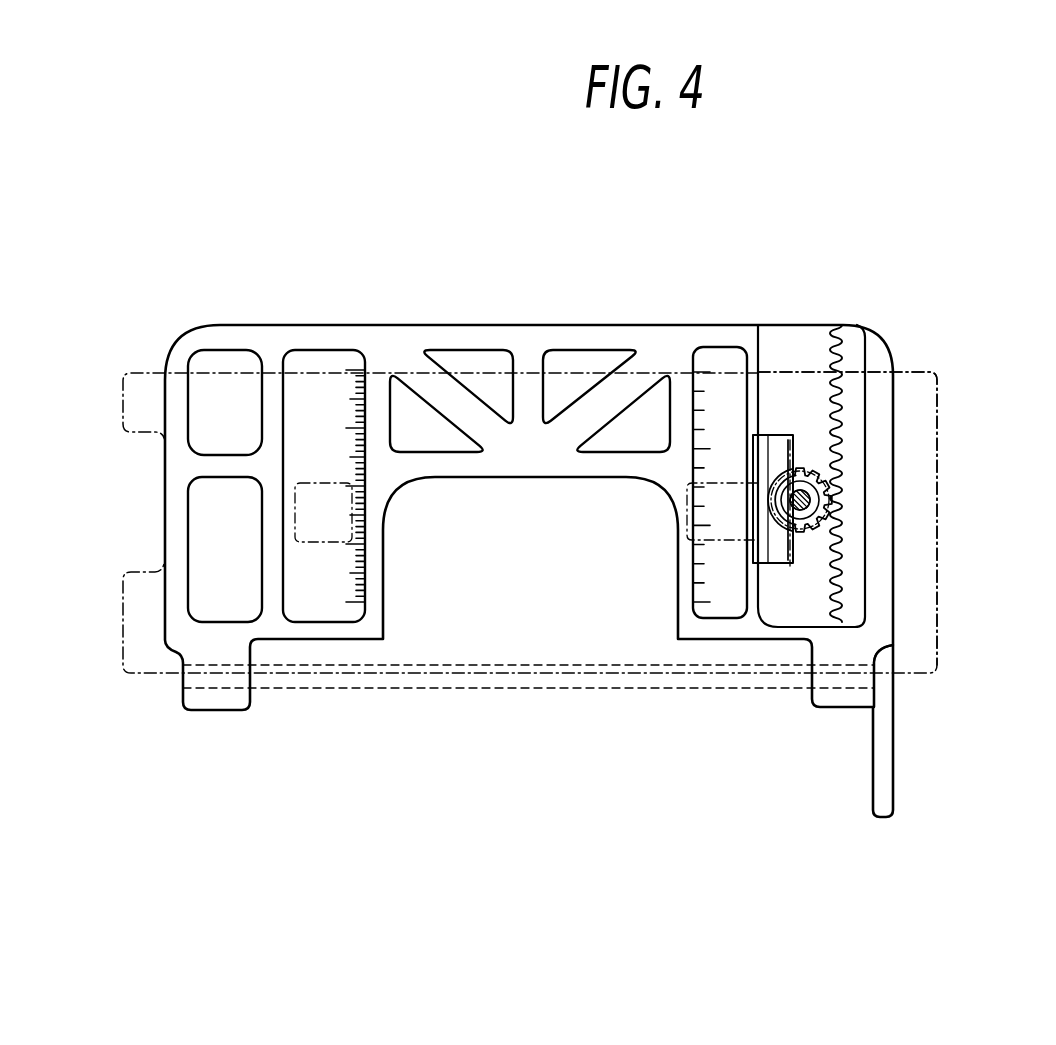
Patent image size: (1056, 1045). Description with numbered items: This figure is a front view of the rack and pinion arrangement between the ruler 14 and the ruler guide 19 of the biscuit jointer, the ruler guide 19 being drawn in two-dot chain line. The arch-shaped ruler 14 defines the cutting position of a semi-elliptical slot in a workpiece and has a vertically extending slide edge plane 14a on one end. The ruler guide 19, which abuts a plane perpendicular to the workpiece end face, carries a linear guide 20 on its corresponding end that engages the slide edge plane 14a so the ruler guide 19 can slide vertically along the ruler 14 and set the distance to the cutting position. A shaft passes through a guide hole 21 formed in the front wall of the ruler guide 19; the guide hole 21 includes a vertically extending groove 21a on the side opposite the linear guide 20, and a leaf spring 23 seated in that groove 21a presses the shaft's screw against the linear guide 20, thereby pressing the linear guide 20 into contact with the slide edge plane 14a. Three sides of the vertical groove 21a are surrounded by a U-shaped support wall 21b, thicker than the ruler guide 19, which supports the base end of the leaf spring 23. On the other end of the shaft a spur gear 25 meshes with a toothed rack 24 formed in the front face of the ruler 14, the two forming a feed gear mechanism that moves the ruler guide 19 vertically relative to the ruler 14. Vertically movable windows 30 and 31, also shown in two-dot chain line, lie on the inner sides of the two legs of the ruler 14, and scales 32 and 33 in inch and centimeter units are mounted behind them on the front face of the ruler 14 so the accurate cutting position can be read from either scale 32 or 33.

The ruler 14 is at (408, 340).
The slide edge plane 14a is at (884, 474).
The ruler guide 19 is at (923, 372).
The linear guide 20 is at (930, 560).
The guide hole 21 is at (838, 518).
The vertical groove 21a is at (787, 450).
The U-shaped support wall 21b is at (765, 437).
The leaf spring 23 is at (797, 468).
The toothed rack 24 is at (858, 612).
The spur gear 25 is at (802, 530).
The window 30 is at (688, 502).
The window 31 is at (295, 522).
The scale 32 is at (707, 585).
The scale 33 is at (345, 583).